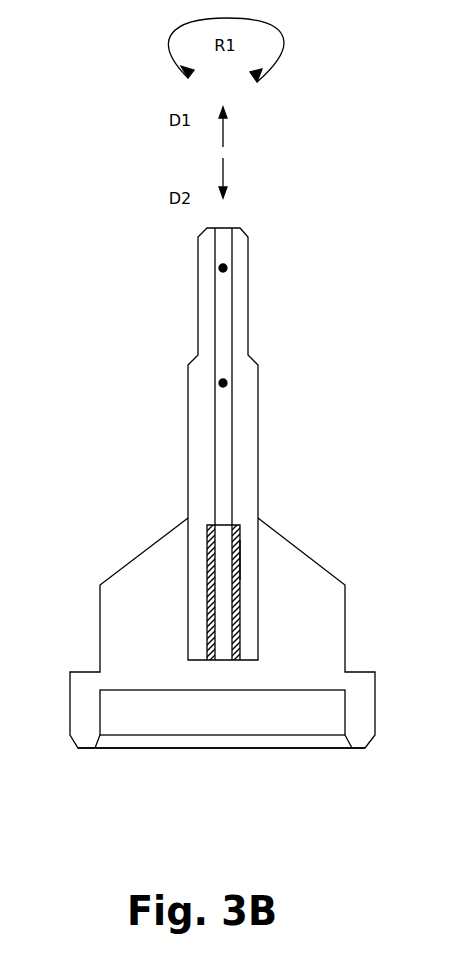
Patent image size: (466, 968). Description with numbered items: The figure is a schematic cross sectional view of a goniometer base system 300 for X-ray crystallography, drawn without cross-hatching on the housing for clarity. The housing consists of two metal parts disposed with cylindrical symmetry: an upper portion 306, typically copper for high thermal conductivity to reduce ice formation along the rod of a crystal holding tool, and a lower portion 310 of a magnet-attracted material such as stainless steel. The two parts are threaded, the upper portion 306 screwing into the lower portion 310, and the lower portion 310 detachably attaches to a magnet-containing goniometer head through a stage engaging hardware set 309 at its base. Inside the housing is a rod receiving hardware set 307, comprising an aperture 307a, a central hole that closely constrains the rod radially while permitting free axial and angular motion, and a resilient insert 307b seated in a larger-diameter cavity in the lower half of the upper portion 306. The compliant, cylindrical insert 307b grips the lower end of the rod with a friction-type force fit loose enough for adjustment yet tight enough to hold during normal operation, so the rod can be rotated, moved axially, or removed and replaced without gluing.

The goniometer base system 300 is at (197, 538).
The upper portion 306 is at (258, 393).
The rod receiving hardware set 307 is at (223, 383).
The aperture 307a is at (223, 268).
The resilient insert 307b is at (240, 560).
The stage engaging hardware set 309 is at (127, 764).
The lower portion 310 is at (122, 570).